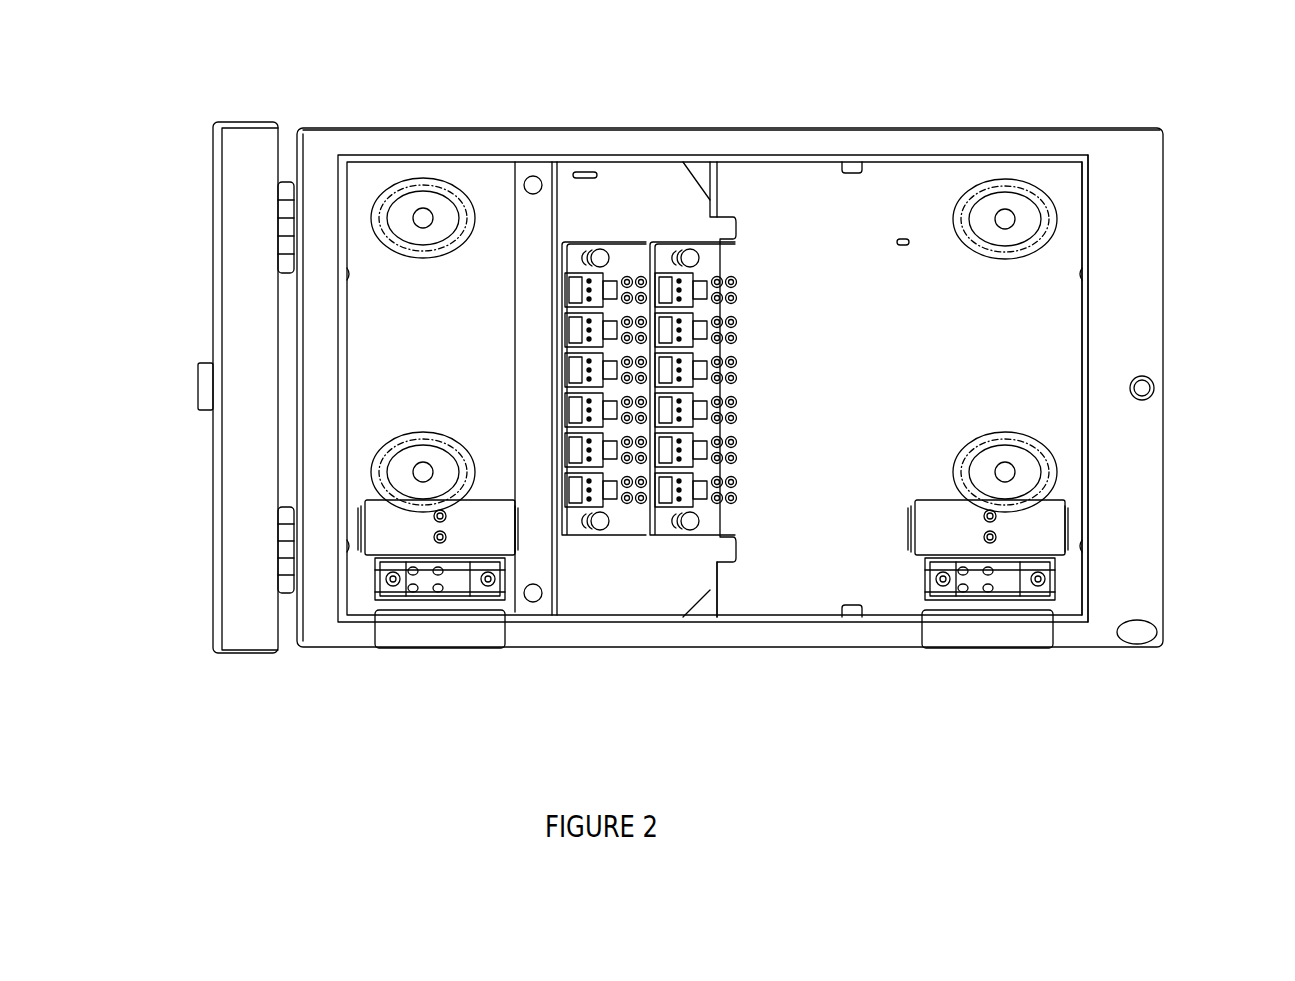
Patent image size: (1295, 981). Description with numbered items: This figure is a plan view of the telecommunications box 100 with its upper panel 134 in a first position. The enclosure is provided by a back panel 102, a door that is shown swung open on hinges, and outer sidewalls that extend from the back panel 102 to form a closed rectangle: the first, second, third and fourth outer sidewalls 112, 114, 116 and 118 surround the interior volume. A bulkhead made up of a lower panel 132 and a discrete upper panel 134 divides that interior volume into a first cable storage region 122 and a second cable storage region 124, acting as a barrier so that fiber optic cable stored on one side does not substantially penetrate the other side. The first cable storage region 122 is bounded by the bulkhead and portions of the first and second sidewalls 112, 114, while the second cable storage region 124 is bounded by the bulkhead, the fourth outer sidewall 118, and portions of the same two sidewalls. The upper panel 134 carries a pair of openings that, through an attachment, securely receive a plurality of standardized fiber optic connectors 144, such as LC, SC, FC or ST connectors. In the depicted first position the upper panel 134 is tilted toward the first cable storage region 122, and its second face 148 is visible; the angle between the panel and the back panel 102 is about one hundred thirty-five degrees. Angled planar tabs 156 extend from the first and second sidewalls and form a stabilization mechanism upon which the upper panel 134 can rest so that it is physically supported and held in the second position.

The telecommunications box 100 is at (152, 97).
The back panel 102 is at (450, 385).
The first outer sidewall 112 is at (765, 622).
The second outer sidewall 114 is at (999, 153).
The third outer sidewall 116 is at (295, 451).
The fourth outer sidewall 118 is at (1092, 467).
The first cable storage region 122 is at (475, 292).
The second cable storage region 124 is at (882, 282).
The lower panel 132 is at (722, 578).
The upper panel 134 is at (671, 217).
The fiber optic connectors 144 is at (738, 405).
The second face 148 is at (707, 205).
The angled planar tabs 156 is at (848, 172).